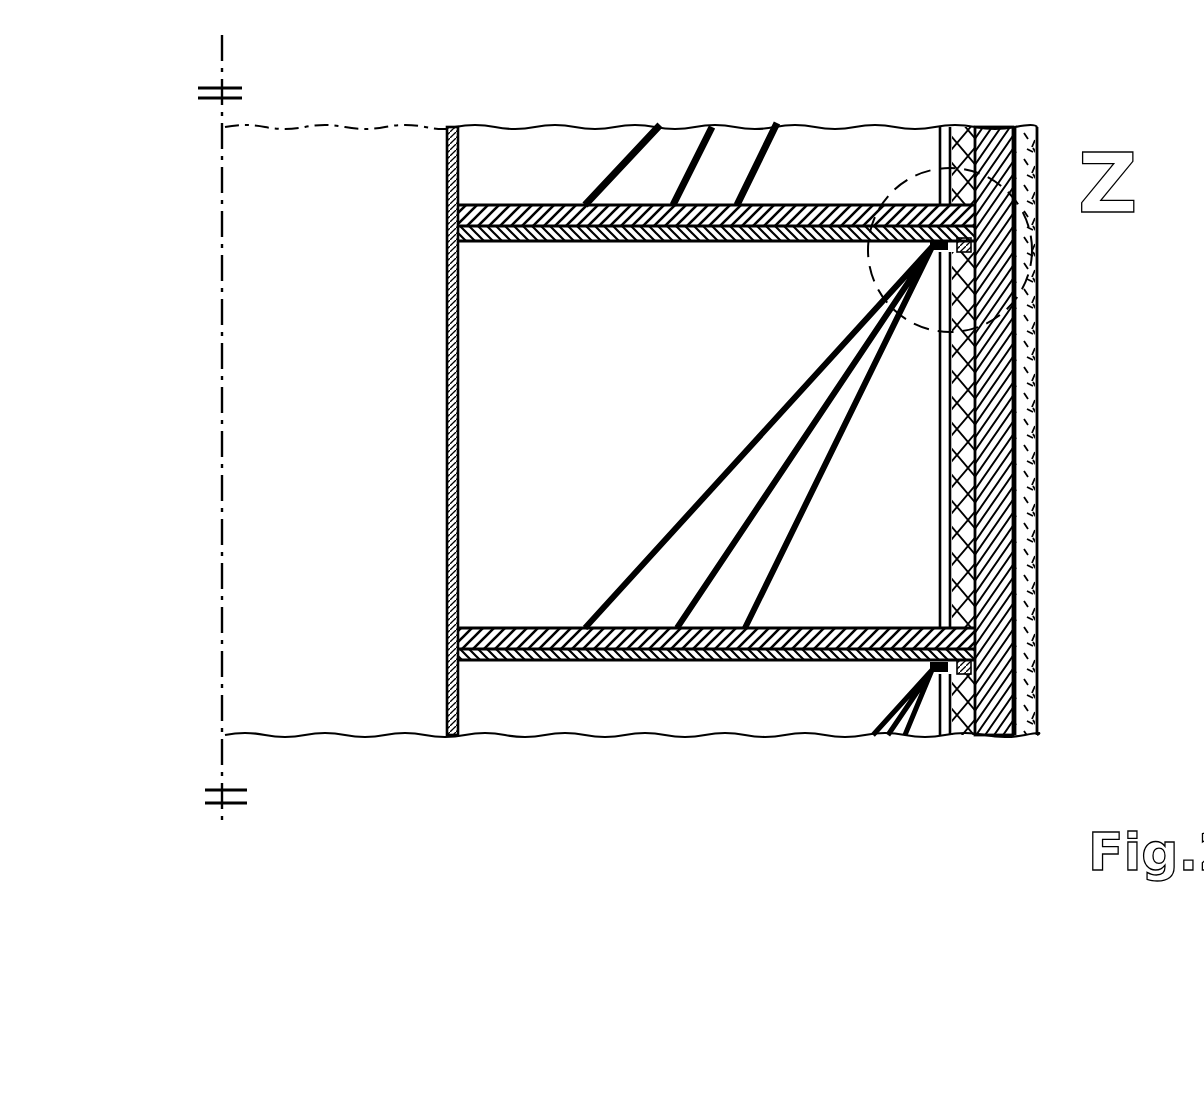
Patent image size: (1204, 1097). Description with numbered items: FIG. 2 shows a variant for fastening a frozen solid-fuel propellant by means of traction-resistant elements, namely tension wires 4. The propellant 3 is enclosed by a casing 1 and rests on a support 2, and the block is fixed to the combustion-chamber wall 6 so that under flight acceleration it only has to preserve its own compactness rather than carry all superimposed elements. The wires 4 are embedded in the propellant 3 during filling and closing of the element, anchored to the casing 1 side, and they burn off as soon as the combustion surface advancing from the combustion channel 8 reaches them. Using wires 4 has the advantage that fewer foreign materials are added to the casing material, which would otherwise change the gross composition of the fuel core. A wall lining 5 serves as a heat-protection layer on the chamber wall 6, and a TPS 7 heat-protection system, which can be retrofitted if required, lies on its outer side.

The casing 1 is at (446, 288).
The support 2 is at (667, 640).
The propellant 3 is at (556, 315).
The tension wire 4 is at (738, 443).
The wall lining 5 is at (957, 438).
The combustion-chamber wall 6 is at (985, 522).
The TPS 7 is at (1025, 608).
The combustion channel 8 is at (339, 460).